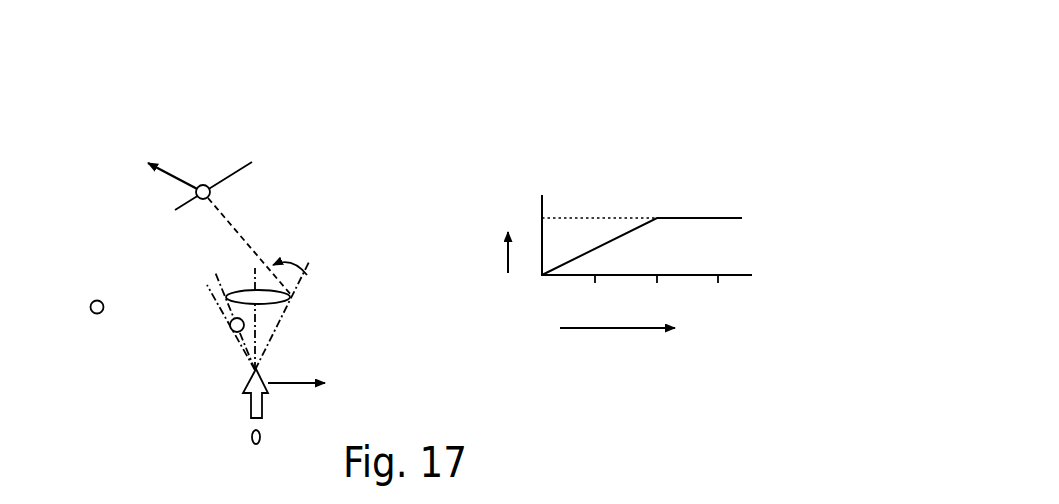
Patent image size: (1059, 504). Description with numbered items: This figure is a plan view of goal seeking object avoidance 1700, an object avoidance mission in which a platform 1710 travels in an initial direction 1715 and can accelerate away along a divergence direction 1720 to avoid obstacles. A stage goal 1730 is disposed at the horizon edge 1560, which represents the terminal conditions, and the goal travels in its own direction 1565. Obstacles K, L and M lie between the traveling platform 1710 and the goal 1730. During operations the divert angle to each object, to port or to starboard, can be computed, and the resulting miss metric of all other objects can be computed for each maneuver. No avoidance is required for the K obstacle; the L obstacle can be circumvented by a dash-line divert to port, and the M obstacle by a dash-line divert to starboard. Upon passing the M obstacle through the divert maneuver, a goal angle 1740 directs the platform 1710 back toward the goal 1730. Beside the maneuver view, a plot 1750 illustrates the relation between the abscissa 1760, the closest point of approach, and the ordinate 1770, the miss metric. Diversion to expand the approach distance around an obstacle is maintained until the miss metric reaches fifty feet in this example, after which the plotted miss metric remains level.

The goal seeking object avoidance 1700 is at (118, 90).
The horizon edge 1560 is at (248, 165).
The direction 1565 is at (173, 179).
The stage goal 1730 is at (212, 192).
The goal angle 1740 is at (275, 247).
The initial direction 1715 is at (248, 383).
The divergence direction 1720 is at (320, 385).
The platform 1710 is at (252, 436).
The plot 1750 is at (645, 168).
The abscissa 1760 is at (635, 346).
The ordinate 1770 is at (505, 268).